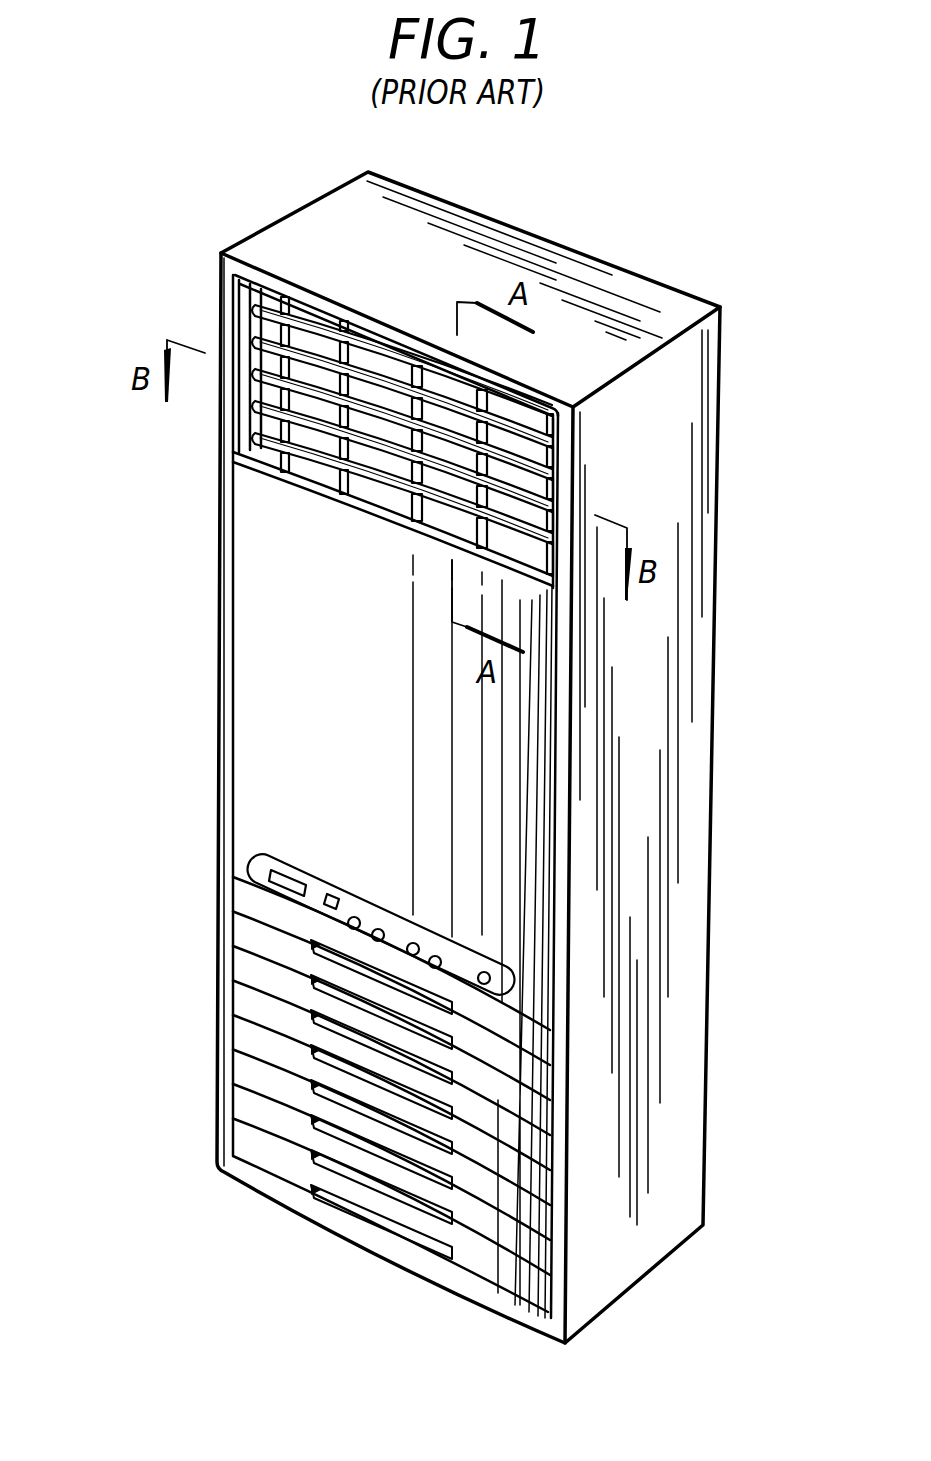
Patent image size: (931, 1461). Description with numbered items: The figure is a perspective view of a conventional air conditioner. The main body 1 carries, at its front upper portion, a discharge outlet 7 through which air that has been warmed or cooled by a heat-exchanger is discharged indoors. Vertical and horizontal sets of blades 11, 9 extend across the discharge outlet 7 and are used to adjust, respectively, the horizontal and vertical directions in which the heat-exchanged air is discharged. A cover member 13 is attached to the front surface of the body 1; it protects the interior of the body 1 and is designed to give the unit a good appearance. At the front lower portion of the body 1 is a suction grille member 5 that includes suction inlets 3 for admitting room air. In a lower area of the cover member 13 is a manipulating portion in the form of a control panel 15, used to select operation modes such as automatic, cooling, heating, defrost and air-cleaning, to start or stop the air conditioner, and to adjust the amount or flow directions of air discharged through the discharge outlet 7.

The main body 1 is at (688, 727).
The suction inlets 3 is at (320, 982).
The suction grille member 5 is at (298, 1069).
The discharge outlet 7 is at (250, 355).
The horizontal blades 9 is at (252, 312).
The vertical blades 11 is at (258, 432).
The cover member 13 is at (242, 724).
The control panel 15 is at (463, 962).